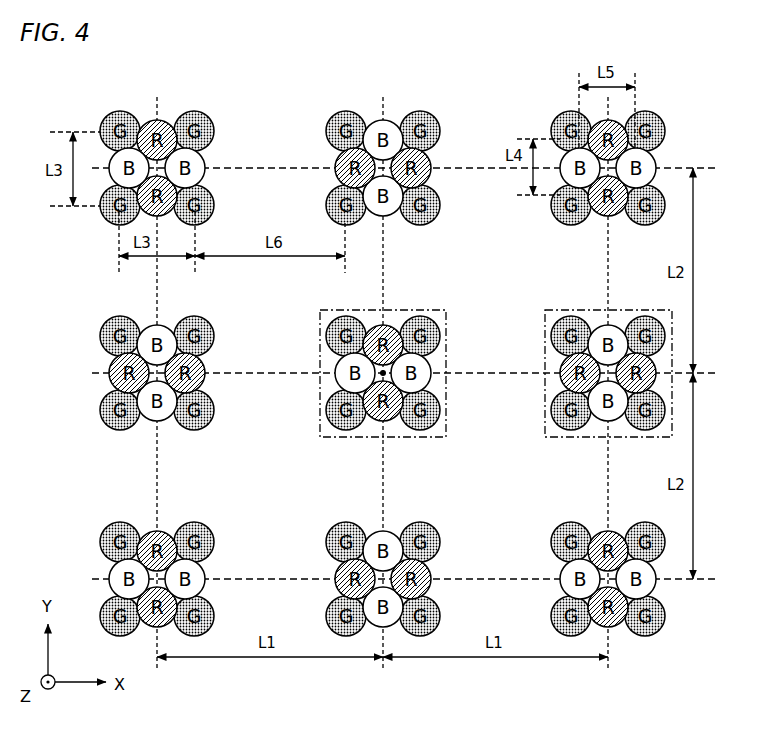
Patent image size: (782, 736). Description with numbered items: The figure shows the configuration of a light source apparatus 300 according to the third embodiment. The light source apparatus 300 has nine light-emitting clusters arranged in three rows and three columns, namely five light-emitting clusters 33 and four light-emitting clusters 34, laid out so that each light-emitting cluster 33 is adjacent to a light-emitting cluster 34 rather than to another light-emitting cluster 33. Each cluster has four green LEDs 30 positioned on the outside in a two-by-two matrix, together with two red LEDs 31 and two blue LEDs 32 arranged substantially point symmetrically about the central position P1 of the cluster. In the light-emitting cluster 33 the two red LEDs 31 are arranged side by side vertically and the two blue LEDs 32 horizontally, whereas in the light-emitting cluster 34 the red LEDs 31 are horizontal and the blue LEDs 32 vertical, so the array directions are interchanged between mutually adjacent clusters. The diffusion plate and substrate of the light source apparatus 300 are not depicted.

The green LED 30 is at (440, 337).
The red LED 31 is at (385, 333).
The blue LED 32 is at (427, 378).
The light-emitting cluster 33 is at (396, 373).
The light-emitting cluster 34 is at (562, 438).
The central position of the light-emitting cluster P1 is at (378, 375).
The light source apparatus 300 is at (412, 386).